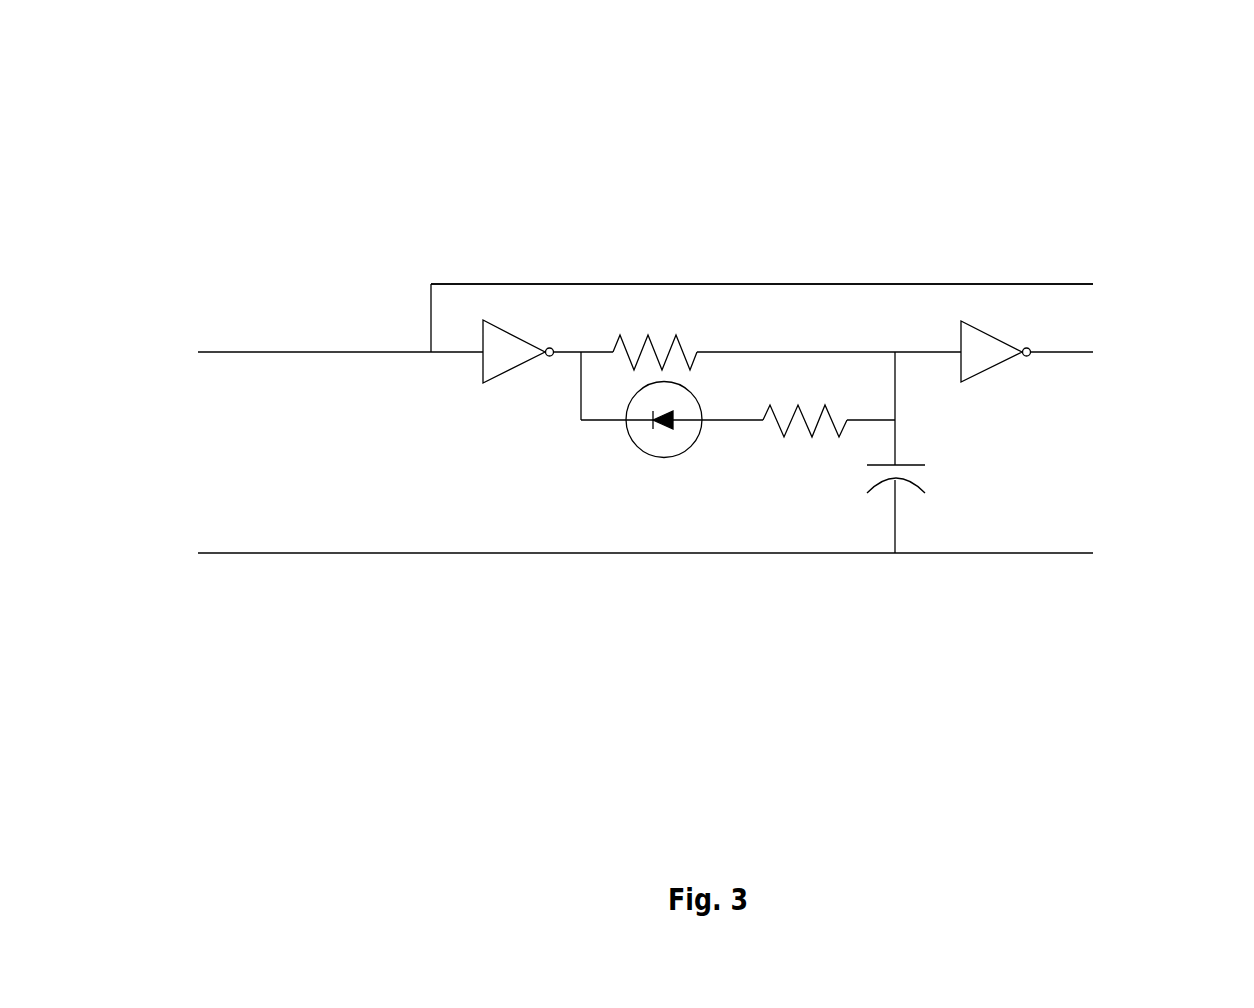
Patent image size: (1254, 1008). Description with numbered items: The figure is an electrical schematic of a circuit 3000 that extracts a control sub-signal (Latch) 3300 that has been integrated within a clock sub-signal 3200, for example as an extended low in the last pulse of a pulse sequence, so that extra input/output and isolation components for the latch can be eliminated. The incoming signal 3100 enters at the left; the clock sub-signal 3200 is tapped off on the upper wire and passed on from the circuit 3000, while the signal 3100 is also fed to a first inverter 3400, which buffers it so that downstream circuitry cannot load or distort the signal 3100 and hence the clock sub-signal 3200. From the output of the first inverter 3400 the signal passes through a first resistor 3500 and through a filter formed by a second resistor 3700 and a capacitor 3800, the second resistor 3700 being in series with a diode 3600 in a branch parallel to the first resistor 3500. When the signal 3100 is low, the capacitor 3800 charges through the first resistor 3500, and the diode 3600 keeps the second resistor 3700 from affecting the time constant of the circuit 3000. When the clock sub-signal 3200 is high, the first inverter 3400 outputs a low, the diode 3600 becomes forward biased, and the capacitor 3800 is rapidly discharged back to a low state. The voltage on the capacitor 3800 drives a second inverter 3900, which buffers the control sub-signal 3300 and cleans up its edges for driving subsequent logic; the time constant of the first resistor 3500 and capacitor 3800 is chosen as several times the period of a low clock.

The circuit 3000 is at (328, 55).
The signal 3100 is at (340, 358).
The clock sub-signal 3200 is at (827, 269).
The control sub-signal (Latch) 3300 is at (1119, 357).
The first inverter 3400 is at (539, 368).
The first resistor 3500 is at (655, 338).
The diode 3600 is at (664, 436).
The second resistor 3700 is at (805, 433).
The capacitor 3800 is at (921, 477).
The second inverter 3900 is at (992, 365).